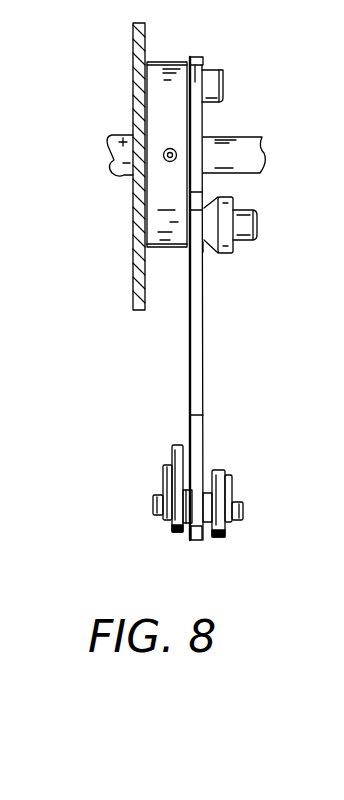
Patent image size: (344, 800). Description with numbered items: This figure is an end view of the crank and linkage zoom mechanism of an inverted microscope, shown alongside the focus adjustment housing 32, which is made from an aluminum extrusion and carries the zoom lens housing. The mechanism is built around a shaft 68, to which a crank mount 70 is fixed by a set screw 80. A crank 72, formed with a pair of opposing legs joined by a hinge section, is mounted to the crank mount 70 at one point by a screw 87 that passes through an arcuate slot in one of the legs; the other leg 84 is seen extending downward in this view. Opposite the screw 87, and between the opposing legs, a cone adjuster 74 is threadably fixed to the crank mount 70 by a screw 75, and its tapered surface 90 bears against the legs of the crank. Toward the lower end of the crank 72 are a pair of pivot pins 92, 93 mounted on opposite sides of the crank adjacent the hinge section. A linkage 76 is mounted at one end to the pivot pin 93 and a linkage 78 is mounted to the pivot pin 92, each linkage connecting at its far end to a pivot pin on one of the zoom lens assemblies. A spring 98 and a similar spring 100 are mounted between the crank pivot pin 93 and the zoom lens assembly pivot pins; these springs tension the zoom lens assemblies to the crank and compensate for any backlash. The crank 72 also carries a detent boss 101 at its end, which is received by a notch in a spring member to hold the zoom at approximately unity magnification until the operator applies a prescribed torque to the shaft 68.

The focus adjustment housing 32 is at (121, 220).
The shaft 68 is at (127, 135).
The crank mount 70 is at (166, 65).
The crank 72 is at (212, 312).
The cone adjuster 74 is at (205, 252).
The screw 75 is at (257, 226).
The linkage 76 is at (170, 447).
The linkage 78 is at (215, 469).
The set screw 80 is at (169, 148).
The leg 84 is at (191, 330).
The screw 87 is at (213, 77).
The tapered surface 90 is at (215, 198).
The pivot pin 92 is at (237, 517).
The pivot pin 93 is at (155, 504).
The spring 98 is at (163, 472).
The spring 100 is at (231, 490).
The detent boss 101 is at (197, 541).